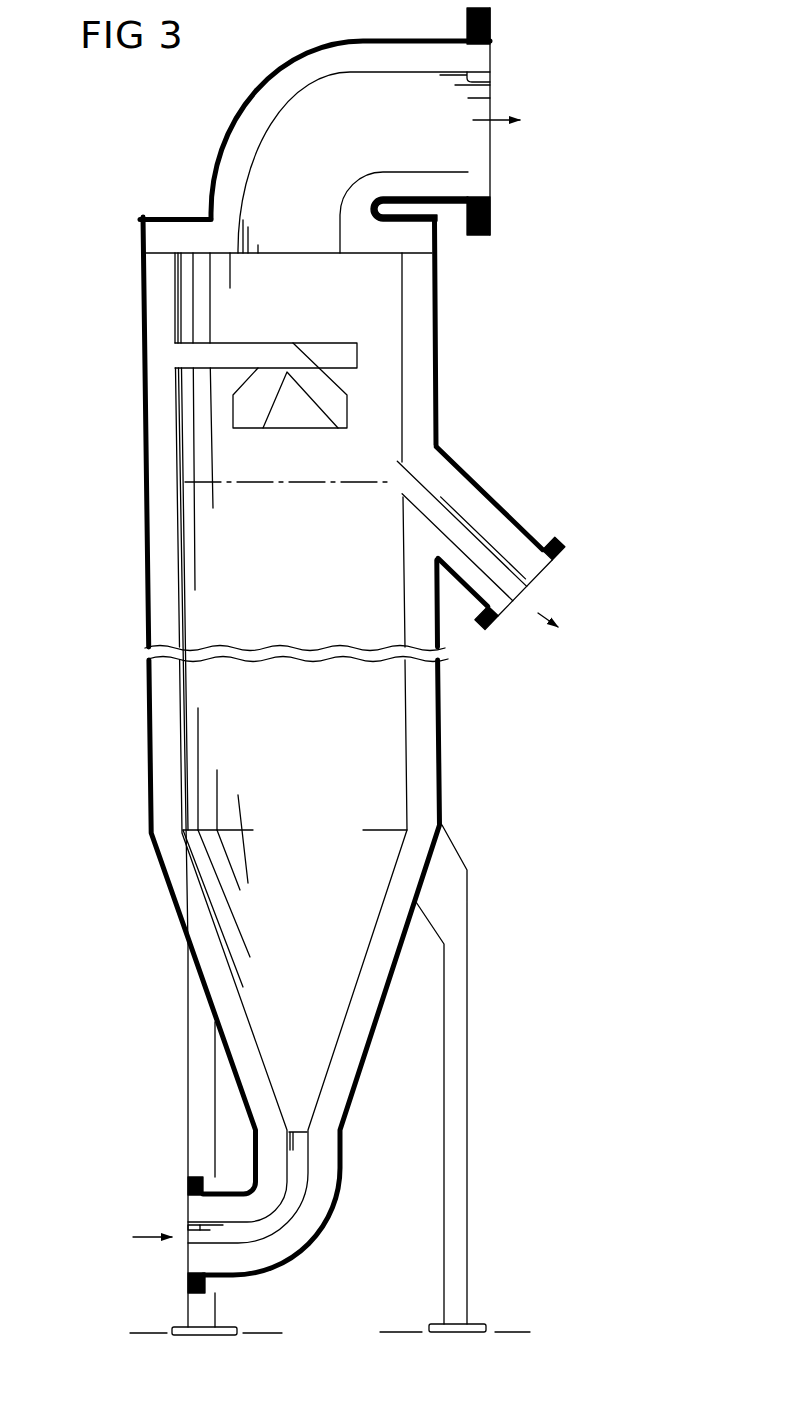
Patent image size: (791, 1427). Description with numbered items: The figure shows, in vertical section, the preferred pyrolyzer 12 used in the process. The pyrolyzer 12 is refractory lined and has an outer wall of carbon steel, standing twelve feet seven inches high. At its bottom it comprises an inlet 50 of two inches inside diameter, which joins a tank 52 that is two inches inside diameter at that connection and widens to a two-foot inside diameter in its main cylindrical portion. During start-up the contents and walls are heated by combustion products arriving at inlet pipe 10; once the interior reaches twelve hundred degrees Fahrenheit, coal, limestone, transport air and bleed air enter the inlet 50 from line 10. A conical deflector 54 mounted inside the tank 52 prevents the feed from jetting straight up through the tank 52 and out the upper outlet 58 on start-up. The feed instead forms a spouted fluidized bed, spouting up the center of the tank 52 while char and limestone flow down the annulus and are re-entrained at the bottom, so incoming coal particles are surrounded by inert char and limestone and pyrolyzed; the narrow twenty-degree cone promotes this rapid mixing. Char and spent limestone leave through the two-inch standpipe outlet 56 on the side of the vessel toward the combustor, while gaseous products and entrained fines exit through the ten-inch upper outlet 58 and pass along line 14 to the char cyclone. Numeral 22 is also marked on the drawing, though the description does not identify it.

The inlet pipe 10 is at (150, 1238).
The pyrolyzer 12 is at (120, 410).
The line 14 is at (500, 122).
The side nozzle outlet 22 is at (532, 598).
The inlet 50 is at (190, 1230).
The tank 52 is at (414, 708).
The conical deflector 54 is at (328, 386).
The standpipe outlet 56 is at (529, 593).
The upper outlet 58 is at (490, 80).